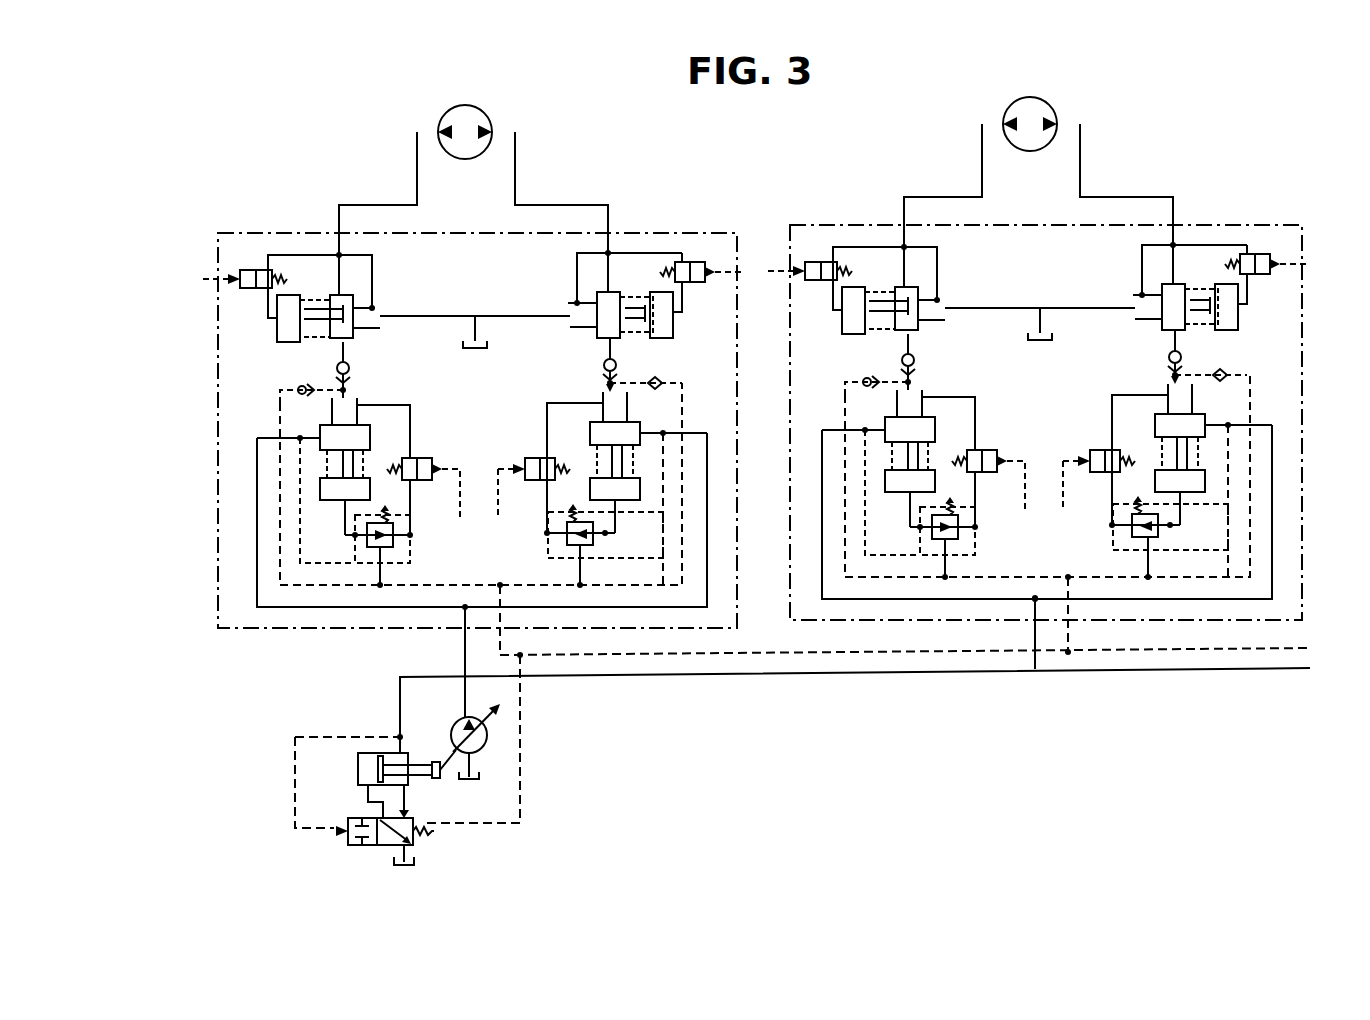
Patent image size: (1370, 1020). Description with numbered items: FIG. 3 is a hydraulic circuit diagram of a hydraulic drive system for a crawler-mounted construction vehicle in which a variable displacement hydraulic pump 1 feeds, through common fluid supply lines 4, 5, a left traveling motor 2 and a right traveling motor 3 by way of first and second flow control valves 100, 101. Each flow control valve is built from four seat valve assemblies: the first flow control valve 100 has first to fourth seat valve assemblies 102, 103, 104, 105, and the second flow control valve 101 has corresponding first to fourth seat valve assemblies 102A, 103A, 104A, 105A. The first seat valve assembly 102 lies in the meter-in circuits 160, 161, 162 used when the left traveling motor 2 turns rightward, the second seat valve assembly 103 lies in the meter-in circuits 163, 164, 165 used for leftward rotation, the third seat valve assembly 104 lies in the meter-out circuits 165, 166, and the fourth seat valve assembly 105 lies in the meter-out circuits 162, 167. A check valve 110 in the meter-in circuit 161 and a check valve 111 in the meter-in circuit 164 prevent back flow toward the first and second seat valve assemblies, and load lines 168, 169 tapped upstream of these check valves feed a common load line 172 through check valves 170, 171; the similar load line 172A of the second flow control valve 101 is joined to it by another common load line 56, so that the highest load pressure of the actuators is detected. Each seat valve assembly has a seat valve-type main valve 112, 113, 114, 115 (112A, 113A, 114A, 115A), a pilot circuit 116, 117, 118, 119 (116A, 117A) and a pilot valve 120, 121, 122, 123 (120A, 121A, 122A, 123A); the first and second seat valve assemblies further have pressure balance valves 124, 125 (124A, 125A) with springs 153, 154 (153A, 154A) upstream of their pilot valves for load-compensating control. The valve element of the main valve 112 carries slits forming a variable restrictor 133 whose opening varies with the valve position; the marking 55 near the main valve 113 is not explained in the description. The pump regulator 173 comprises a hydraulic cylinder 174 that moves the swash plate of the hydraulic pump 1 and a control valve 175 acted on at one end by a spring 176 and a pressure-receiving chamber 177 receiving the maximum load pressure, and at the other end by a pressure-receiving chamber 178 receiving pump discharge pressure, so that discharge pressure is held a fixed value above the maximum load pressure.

The variable displacement hydraulic pump 1 is at (494, 744).
The left traveling motor 2 is at (465, 105).
The right traveling motor 3 is at (1030, 110).
The common fluid supply line 4 is at (465, 690).
The common fluid supply line 5 is at (940, 673).
The pilot valve spool 55 is at (608, 460).
The common load line 56 is at (920, 655).
The first flow control valve 100 is at (298, 633).
The second flow control valve 101 is at (1079, 422).
The first seat valve assembly 102 is at (308, 507).
The first seat valve assembly 102A is at (829, 492).
The second seat valve assembly 103 is at (652, 486).
The second seat valve assembly 103A is at (1281, 466).
The third seat valve assembly 104 is at (641, 274).
The third seat valve assembly 104A is at (1205, 236).
The fourth seat valve assembly 105 is at (305, 290).
The fourth seat valve assembly 105A is at (868, 250).
The check valve 110 is at (350, 372).
The check valve 111 is at (603, 370).
The main valve 112 is at (320, 490).
The main valve 112A is at (862, 458).
The main valve 113 is at (625, 434).
The main valve 113A is at (1256, 454).
The main valve 114 is at (674, 323).
The main valve 114A is at (1259, 307).
The main valve 115 is at (277, 318).
The main valve 115A is at (855, 313).
The pilot circuit 116 is at (411, 405).
The pilot circuit 116A is at (961, 407).
The pilot circuit 117 is at (547, 410).
The pilot circuit 117A is at (1125, 444).
The pilot circuit 118 is at (577, 257).
The pilot circuit 119 is at (373, 255).
The pilot valve 120 is at (420, 458).
The pilot valve 120A is at (997, 465).
The pilot valve 121 is at (521, 458).
The pilot valve 121A is at (1095, 456).
The pilot valve 122 is at (696, 262).
The pilot valve 122A is at (1267, 246).
The pilot valve 123 is at (248, 270).
The pilot valve 123A is at (810, 235).
The pressure balance valve 124 is at (365, 537).
The pressure balance valve 124A is at (924, 542).
The pressure balance valve 125 is at (594, 540).
The pressure balance valve 125A is at (1169, 540).
The variable restrictor 133 is at (343, 462).
The spring 153 is at (389, 508).
The spring 153A is at (994, 512).
The spring 154 is at (570, 508).
The spring 154A is at (1094, 512).
The meter-in circuit 160 is at (257, 578).
The meter-in circuit 161 is at (348, 352).
The meter-in circuit 162 is at (380, 205).
The meter-in circuit 163 is at (708, 565).
The meter-in circuit 164 is at (606, 348).
The meter-in circuit 165 is at (562, 205).
The meter-out circuit 166 is at (528, 316).
The meter-out circuit 167 is at (410, 316).
The load line 168 is at (318, 386).
The load line 169 is at (633, 382).
The check valve 170 is at (300, 396).
The check valve 171 is at (663, 383).
The common load line 172 is at (441, 580).
The load line 172A is at (1047, 477).
The pump regulator 173 is at (288, 803).
The hydraulic cylinder 174 is at (430, 757).
The control valve 175 is at (356, 818).
The spring 176 is at (470, 850).
The pressure-receiving chamber 177 is at (425, 816).
The pressure-receiving chamber 178 is at (348, 838).